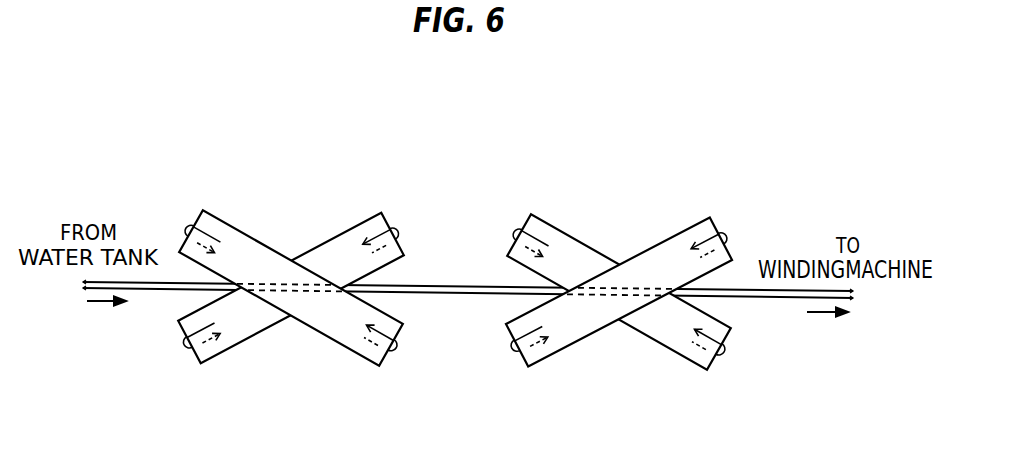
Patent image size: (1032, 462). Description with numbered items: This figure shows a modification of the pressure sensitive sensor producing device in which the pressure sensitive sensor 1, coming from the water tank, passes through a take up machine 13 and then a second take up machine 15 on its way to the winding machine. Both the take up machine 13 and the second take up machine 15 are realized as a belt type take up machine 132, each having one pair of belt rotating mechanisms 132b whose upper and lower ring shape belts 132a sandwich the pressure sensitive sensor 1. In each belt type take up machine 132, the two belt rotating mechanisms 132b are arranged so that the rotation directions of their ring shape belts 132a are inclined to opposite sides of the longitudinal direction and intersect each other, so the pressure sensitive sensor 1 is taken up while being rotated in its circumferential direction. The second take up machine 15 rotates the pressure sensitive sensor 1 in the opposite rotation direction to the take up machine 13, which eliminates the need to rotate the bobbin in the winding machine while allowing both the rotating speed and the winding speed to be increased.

The pressure sensitive sensor 1 is at (462, 285).
The take up machine 13 is at (215, 190).
The second take up machine 15 is at (522, 192).
The belt type take up machine 132 is at (188, 365).
The ring shape belt 132a is at (332, 307).
The belt rotating mechanism 132b is at (197, 300).